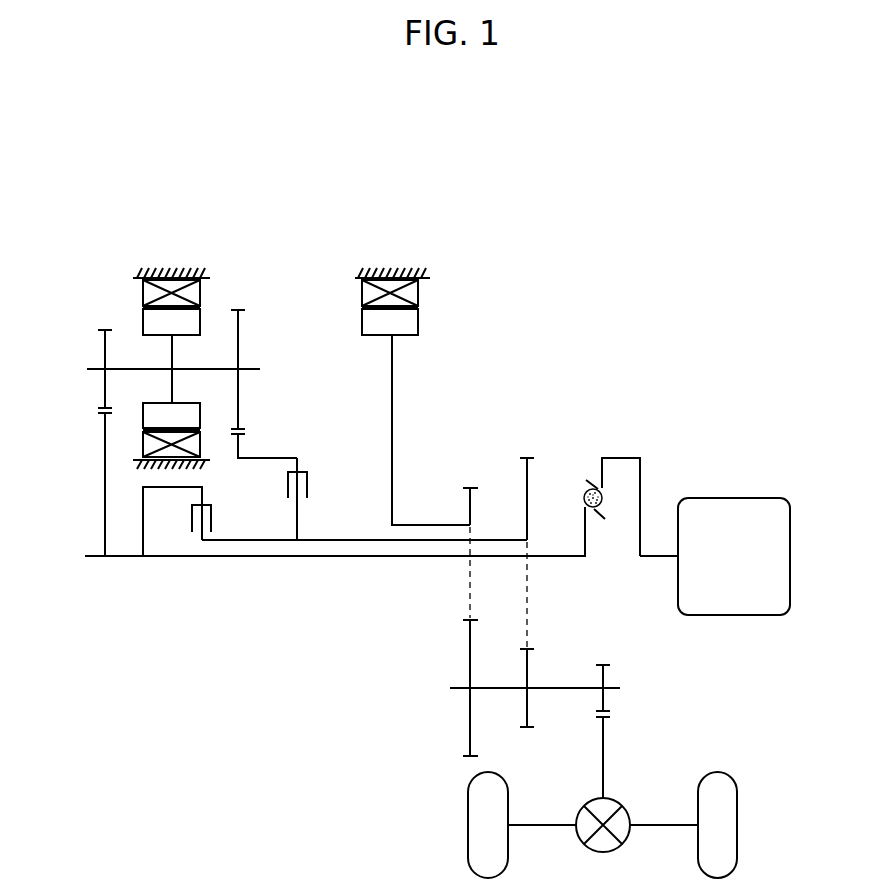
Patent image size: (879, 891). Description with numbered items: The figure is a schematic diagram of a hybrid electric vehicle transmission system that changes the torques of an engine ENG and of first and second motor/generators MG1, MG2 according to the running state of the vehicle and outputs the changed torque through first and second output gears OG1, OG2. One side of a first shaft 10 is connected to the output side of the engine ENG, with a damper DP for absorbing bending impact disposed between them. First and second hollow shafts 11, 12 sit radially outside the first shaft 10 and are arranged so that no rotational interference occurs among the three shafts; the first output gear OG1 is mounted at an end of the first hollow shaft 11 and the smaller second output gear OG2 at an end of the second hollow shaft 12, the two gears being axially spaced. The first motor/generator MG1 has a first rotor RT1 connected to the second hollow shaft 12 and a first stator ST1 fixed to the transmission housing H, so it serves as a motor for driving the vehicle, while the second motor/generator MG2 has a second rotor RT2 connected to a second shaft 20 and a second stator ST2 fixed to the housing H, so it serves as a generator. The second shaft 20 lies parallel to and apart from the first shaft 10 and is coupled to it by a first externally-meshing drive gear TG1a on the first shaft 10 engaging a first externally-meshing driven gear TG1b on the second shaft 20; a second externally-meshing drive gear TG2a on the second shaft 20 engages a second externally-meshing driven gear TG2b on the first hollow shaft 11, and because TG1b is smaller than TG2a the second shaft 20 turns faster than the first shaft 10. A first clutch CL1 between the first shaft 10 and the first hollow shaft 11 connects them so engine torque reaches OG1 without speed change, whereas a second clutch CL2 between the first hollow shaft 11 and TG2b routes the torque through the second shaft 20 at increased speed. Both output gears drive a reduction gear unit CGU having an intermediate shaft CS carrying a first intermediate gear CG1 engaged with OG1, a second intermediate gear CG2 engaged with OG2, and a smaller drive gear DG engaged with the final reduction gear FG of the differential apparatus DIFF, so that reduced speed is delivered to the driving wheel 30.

The transmission housing H is at (195, 277).
The first motor/generator MG1 is at (399, 368).
The second motor/generator MG2 is at (173, 334).
The first stator ST1 is at (362, 290).
The first rotor RT1 is at (362, 320).
The second stator ST2 is at (143, 292).
The second rotor RT2 is at (143, 322).
The second shaft 20 is at (118, 371).
The first externally-meshing drive gear TG1a is at (105, 517).
The first externally-meshing driven gear TG1b is at (105, 351).
The second externally-meshing drive gear TG2a is at (240, 351).
The second externally-meshing driven gear TG2b is at (240, 448).
The first clutch CL1 is at (219, 509).
The second clutch CL2 is at (315, 476).
The first shaft 10 is at (277, 558).
The first hollow shaft 11 is at (363, 558).
The second hollow shaft 12 is at (428, 542).
The first output gear OG1 is at (527, 480).
The second output gear OG2 is at (470, 503).
The damper DP is at (603, 532).
The engine ENG is at (715, 556).
The reduction gear unit CGU is at (467, 689).
The first intermediate gear CG1 is at (527, 665).
The second intermediate gear CG2 is at (470, 652).
The intermediate shaft CS is at (492, 690).
The drive gear DG is at (605, 680).
The final reduction gear FG is at (605, 745).
The differential apparatus DIFF is at (627, 792).
The driving wheel 30 is at (468, 860).